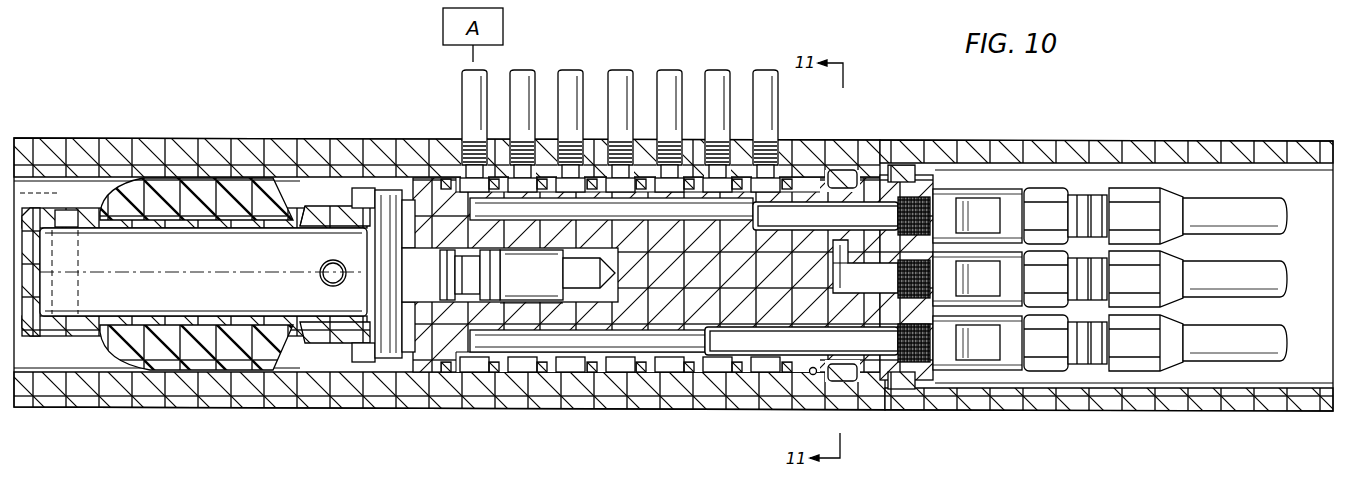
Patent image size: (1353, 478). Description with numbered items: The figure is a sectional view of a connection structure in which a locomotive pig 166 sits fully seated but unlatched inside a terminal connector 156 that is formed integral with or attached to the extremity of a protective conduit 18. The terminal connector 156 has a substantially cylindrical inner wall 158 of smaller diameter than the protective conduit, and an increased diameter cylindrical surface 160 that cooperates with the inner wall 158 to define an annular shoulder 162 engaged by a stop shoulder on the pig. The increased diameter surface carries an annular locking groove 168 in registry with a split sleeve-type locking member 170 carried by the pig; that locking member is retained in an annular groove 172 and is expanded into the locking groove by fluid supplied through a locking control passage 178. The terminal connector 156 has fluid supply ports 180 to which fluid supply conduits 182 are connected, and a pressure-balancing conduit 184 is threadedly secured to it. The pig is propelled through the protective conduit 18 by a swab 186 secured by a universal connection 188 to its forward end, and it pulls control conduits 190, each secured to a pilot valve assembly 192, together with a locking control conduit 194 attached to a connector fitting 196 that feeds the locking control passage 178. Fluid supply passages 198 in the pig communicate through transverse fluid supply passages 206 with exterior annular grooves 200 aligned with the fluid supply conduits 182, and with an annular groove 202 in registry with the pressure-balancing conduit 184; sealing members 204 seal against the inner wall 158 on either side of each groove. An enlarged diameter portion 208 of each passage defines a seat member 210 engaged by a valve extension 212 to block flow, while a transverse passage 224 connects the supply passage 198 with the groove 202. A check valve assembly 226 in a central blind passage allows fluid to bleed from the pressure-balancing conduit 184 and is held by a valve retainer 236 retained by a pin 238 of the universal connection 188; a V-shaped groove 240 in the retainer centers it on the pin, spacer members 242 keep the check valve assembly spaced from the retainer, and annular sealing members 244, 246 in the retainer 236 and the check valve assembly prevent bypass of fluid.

The protective conduit 18 is at (1232, 152).
The terminal connector 156 is at (228, 152).
The inner wall 158 is at (268, 368).
The increased diameter cylindrical surface 160 is at (866, 173).
The annular shoulder 162 is at (810, 374).
The locomotive pig 166 is at (666, 294).
The annular locking groove 168 is at (845, 170).
The split sleeve-type locking member 170 is at (845, 381).
The annular groove 172 is at (806, 263).
The locking control passage 178 is at (870, 284).
The fluid supply ports 180 is at (681, 173).
The fluid supply conduits 182 is at (537, 78).
The pressure-balancing conduit 184 is at (462, 92).
The swab 186 is at (168, 360).
The universal connection 188 is at (320, 204).
The control conduits 190 is at (1255, 208).
The pilot valve assembly 192 is at (1008, 196).
The locking control conduit 194 is at (1253, 300).
The connector fitting 196 is at (947, 292).
The fluid supply passages 198 is at (606, 220).
The annular grooves 200 is at (633, 173).
The annular groove 202 is at (471, 366).
The sealing members 204 is at (640, 372).
The transverse fluid supply passages 206 is at (750, 203).
The enlarged diameter portion 208 is at (838, 243).
The seat members 210 is at (712, 328).
The valve extension 212 is at (918, 170).
The transverse passage 224 is at (460, 172).
The check valve assembly 226 is at (527, 312).
The valve retainer 236 is at (435, 343).
The pin 238 is at (395, 335).
The V-shaped groove 240 is at (330, 342).
The spacer members 242 is at (447, 318).
The annular sealing member 244 is at (446, 250).
The annular sealing member 246 is at (502, 250).